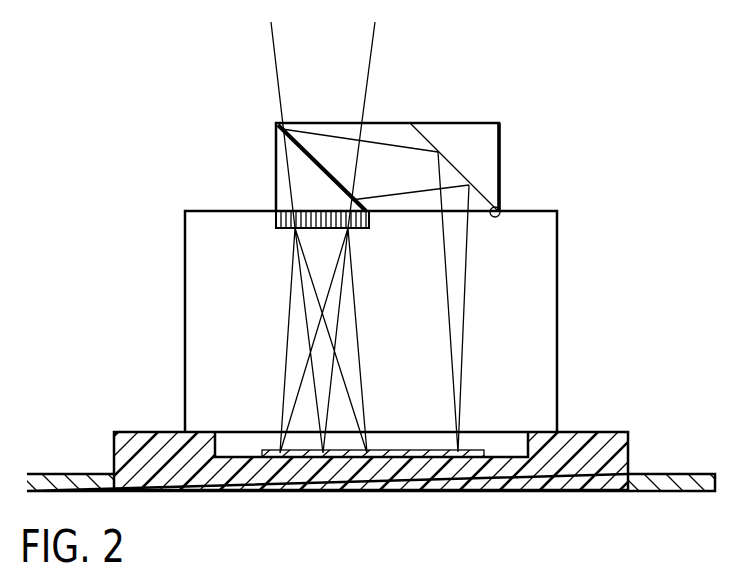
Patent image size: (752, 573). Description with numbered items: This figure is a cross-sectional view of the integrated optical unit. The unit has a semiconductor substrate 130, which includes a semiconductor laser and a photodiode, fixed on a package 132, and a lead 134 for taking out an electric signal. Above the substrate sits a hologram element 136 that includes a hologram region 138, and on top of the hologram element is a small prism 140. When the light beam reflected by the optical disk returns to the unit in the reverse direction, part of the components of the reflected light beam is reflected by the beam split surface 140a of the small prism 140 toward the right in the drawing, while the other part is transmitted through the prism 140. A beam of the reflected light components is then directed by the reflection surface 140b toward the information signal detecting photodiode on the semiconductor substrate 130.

The semiconductor substrate 130 is at (479, 450).
The package 132 is at (420, 491).
The lead 134 is at (663, 477).
The hologram element 136 is at (548, 295).
The hologram region 138 is at (280, 222).
The small prism 140 is at (452, 123).
The beam split surface 140a is at (304, 128).
The reflection surface 140b is at (501, 208).